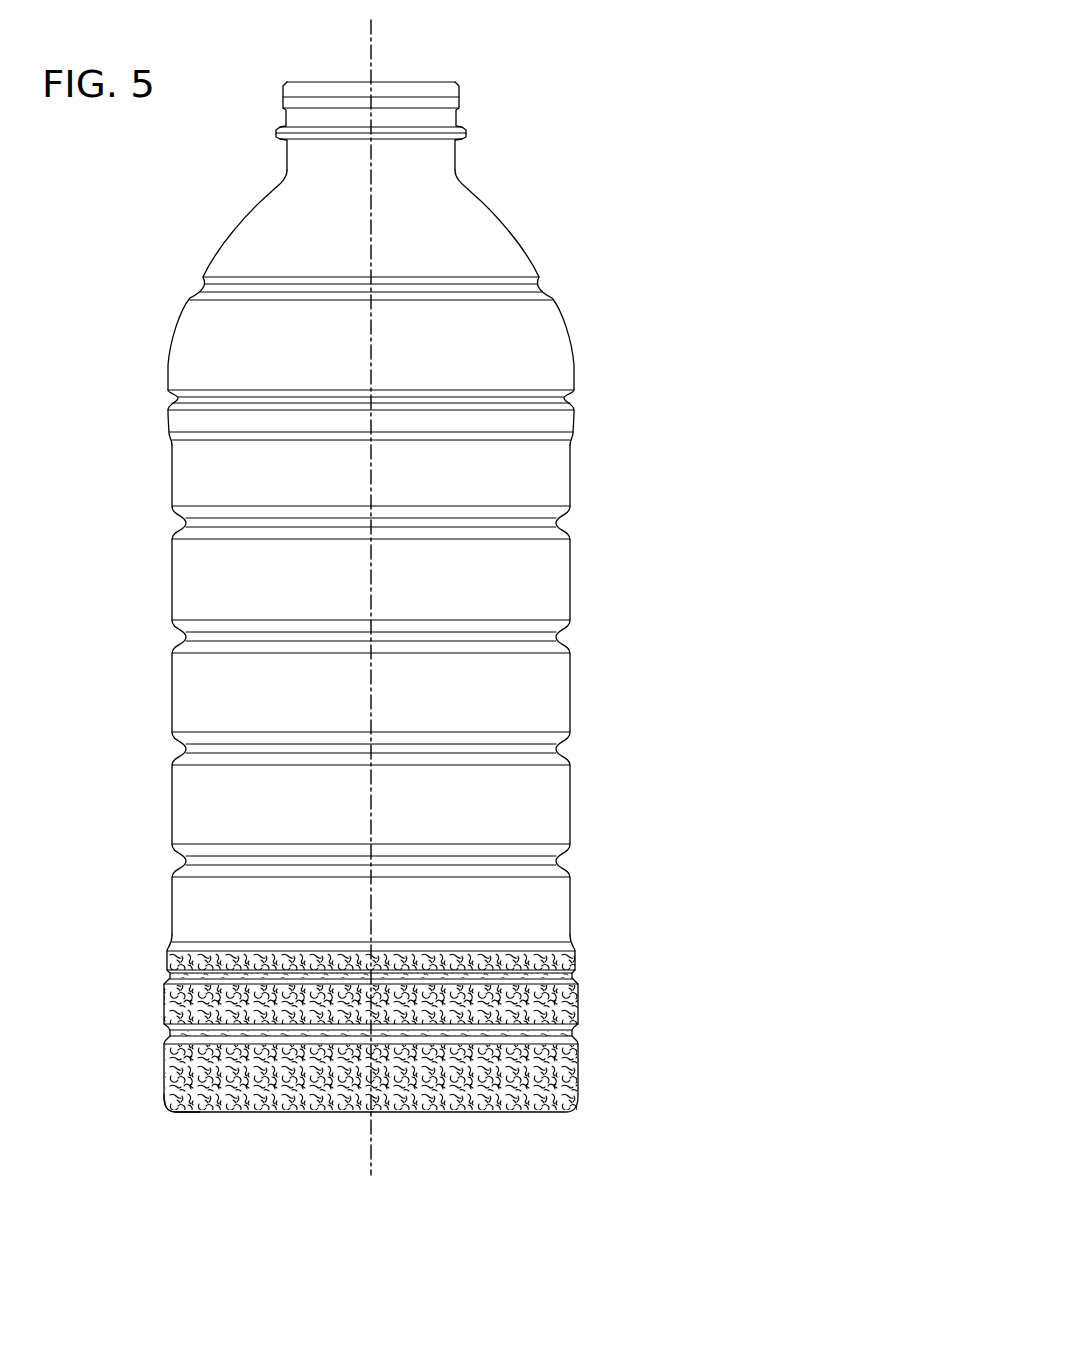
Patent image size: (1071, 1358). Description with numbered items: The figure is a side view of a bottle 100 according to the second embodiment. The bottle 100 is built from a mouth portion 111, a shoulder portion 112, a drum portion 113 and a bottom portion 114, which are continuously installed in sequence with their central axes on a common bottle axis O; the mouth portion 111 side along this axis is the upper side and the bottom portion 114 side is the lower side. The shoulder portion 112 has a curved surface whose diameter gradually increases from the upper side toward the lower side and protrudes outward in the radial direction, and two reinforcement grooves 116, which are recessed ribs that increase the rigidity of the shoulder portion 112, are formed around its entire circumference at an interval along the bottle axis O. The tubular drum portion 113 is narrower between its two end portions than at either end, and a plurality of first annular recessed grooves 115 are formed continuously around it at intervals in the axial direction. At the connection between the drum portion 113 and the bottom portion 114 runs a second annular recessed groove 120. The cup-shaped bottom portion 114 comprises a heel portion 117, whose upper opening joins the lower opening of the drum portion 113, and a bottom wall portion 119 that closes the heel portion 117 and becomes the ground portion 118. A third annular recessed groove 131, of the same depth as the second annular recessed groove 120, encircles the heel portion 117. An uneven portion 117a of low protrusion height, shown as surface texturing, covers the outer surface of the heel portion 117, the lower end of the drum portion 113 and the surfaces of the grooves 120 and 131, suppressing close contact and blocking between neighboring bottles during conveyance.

The bottle 100 is at (652, 96).
The bottle axis O is at (378, 38).
The mouth portion 111 is at (466, 82).
The shoulder portion 112 is at (510, 210).
The drum portion 113 is at (578, 474).
The bottom portion 114 is at (709, 1013).
The first annular recessed groove 115 is at (185, 520).
The reinforcement groove 116 is at (202, 288).
The heel portion 117 is at (580, 1012).
The uneven portion 117a is at (533, 1012).
The ground portion 118 is at (173, 1112).
The bottom wall portion 119 is at (550, 1118).
The second annular recessed groove 120 is at (168, 977).
The third annular recessed groove 131 is at (168, 1033).